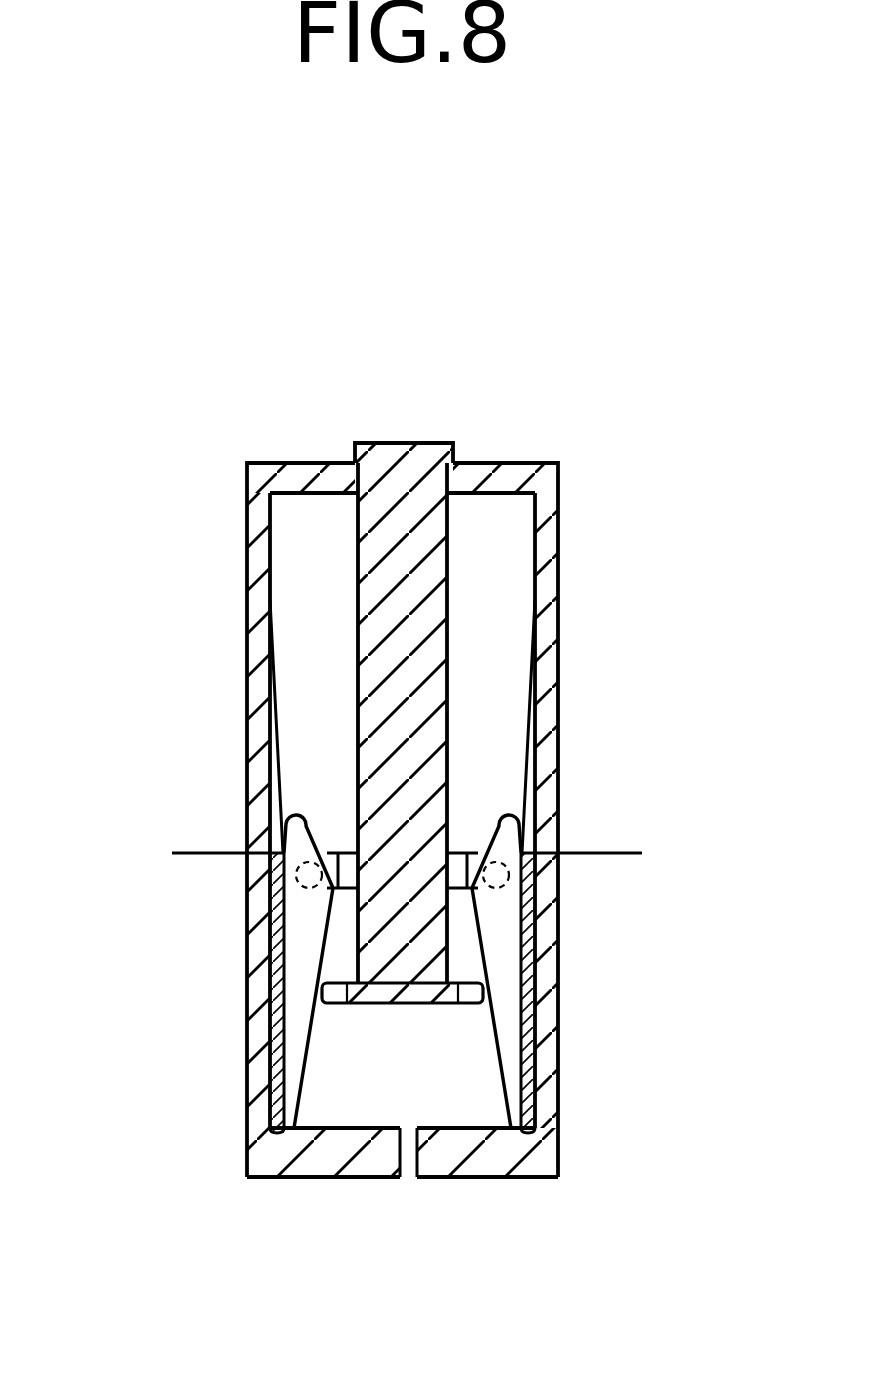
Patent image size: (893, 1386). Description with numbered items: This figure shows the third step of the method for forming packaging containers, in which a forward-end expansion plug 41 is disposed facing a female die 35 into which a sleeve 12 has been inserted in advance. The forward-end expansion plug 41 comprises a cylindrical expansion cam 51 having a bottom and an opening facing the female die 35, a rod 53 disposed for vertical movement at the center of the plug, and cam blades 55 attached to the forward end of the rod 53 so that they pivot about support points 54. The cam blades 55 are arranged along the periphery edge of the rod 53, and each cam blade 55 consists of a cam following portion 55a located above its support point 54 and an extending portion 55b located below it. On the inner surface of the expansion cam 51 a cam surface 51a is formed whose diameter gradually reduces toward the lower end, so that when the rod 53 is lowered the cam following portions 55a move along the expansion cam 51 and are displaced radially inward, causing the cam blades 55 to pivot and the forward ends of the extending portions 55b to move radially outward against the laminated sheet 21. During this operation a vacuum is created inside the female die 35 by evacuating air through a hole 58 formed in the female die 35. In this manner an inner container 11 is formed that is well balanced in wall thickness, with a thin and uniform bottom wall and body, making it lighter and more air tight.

The expansion cam 51 is at (426, 895).
The cam surface 51a is at (531, 578).
The rod 53 is at (387, 463).
The forward-end expansion plug 41 is at (295, 665).
The laminated sheet 21 is at (608, 855).
The support point 54 is at (317, 880).
The cam blade 55 is at (378, 864).
The cam following portion 55a is at (513, 813).
The extending portion 55b is at (507, 995).
The inner container 11 is at (277, 1035).
The sleeve 12 is at (540, 947).
The female die 35 is at (265, 1127).
The hole 58 is at (413, 1178).